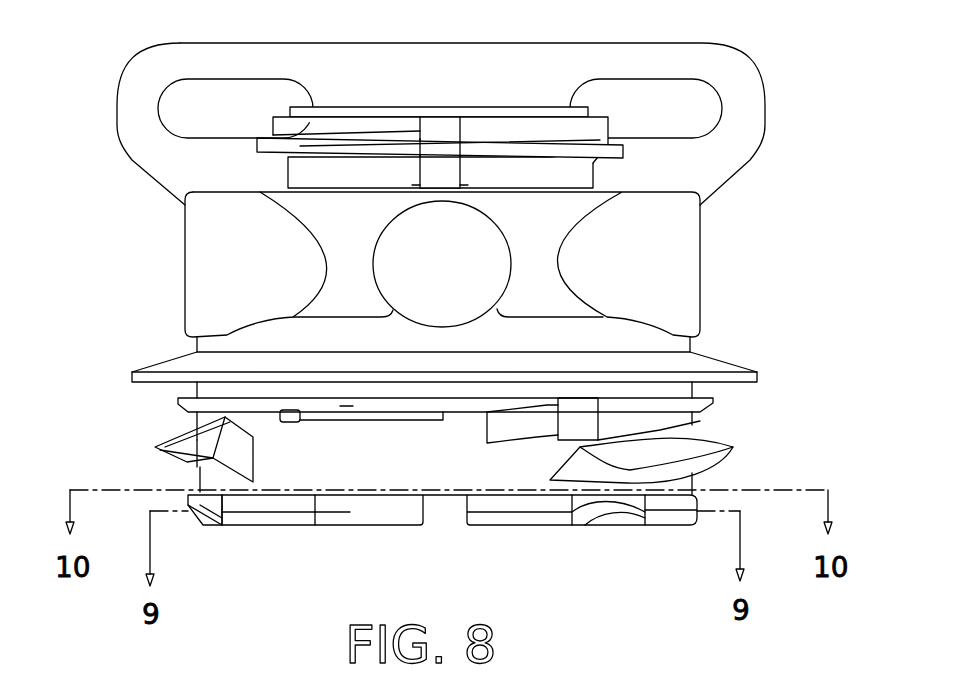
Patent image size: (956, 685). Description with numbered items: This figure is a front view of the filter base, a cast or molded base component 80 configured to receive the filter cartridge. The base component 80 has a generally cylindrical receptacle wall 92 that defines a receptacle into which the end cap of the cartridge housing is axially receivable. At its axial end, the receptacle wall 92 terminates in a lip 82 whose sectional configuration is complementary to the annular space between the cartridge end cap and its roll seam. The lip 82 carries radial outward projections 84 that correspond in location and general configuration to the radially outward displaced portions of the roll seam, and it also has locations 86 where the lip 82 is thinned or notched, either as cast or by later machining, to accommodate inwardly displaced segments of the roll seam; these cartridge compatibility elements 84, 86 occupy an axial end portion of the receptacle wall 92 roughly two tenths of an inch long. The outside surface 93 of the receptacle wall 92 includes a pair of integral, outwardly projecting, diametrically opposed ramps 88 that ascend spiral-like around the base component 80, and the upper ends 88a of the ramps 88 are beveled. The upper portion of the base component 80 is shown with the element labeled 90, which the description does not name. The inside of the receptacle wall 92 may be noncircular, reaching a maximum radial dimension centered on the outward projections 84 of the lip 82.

The base component 80 is at (78, 178).
The lip 82 is at (512, 515).
The radial outward projections 84 is at (207, 522).
The locations 86 is at (356, 522).
The ramps 88 is at (170, 438).
The upper ends 88a is at (213, 430).
The cap assembly 90 is at (361, 60).
The receptacle wall 92 is at (197, 473).
The outside surface 93 is at (380, 463).